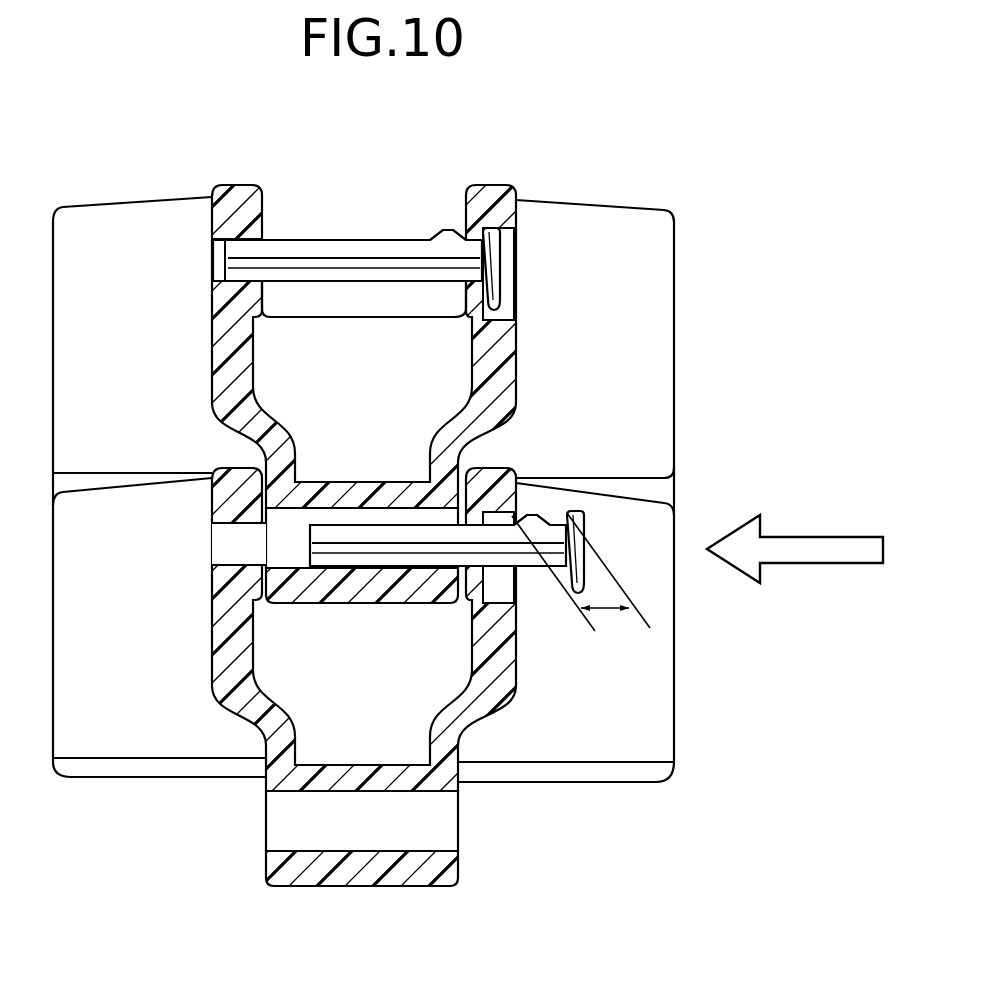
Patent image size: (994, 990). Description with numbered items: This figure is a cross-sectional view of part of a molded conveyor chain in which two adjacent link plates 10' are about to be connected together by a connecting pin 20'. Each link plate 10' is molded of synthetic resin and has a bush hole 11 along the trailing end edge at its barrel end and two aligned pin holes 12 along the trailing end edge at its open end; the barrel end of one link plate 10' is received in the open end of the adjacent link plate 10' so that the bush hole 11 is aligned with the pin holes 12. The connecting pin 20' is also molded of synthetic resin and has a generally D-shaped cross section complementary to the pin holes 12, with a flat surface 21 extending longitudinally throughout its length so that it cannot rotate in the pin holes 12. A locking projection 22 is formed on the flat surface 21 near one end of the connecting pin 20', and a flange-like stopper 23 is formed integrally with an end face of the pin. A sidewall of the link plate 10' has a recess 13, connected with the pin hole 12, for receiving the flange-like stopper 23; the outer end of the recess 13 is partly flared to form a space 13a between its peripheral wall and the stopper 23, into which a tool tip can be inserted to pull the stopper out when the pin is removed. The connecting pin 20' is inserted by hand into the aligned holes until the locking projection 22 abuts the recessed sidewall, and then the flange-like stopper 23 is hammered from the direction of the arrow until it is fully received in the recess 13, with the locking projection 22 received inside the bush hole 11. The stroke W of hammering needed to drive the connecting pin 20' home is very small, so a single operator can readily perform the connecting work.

The link plate 10' is at (497, 502).
The bush hole 11 is at (292, 560).
The pin hole 12 is at (215, 266).
The recess 13 is at (508, 281).
The space 13a is at (512, 321).
The connecting pin 20' is at (438, 364).
The flat surface 21 is at (300, 240).
The locking projection 22 is at (442, 229).
The flange-like stopper 23 is at (497, 246).
The stroke of hammering W is at (581, 584).